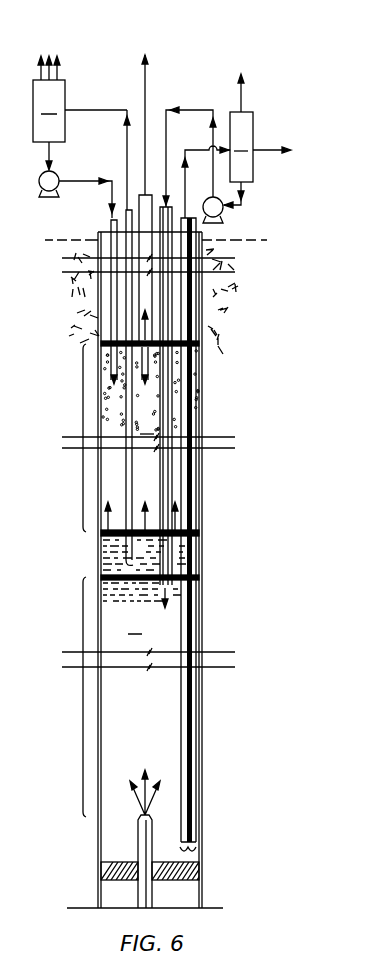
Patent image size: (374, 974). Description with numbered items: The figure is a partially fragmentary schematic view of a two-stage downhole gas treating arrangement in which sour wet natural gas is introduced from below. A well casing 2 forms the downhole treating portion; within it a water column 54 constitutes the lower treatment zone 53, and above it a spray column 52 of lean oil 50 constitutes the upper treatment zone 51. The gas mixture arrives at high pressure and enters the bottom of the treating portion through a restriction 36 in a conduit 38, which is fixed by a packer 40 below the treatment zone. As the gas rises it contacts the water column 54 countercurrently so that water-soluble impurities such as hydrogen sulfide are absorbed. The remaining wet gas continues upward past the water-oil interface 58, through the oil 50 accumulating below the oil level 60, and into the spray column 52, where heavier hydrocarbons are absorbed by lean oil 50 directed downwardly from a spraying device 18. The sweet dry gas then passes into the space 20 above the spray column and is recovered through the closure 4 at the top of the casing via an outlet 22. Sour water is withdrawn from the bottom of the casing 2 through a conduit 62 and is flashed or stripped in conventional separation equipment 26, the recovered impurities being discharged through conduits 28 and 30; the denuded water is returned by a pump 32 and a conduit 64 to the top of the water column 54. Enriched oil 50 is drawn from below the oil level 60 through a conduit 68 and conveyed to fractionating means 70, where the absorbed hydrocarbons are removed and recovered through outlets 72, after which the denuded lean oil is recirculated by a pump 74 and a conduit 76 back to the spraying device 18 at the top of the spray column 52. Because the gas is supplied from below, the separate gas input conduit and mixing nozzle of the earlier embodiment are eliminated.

The casing 2 is at (200, 613).
The closure 4 is at (98, 237).
The spraying device 18 is at (203, 343).
The space 20 is at (111, 298).
The outlet 22 is at (148, 86).
The separation equipment 26 is at (241, 147).
The conduit 28 is at (244, 108).
The conduit 30 is at (262, 148).
The pump 32 is at (226, 214).
The restriction 36 is at (144, 814).
The conduit 38 is at (140, 897).
The packer 40 is at (200, 872).
The lean oil 50 is at (200, 545).
The treatment zone 51 is at (83, 406).
The spray column 52 is at (141, 474).
The treatment zone 53 is at (83, 690).
The water column 54 is at (147, 611).
The water-oil interface 58 is at (200, 572).
The oil level 60 is at (200, 533).
The conduit 62 is at (185, 708).
The conduit 64 is at (188, 110).
The conduit 68 is at (127, 473).
The fractionating means 70 is at (80, 125).
The outlets 72 is at (58, 73).
The pump 74 is at (59, 174).
The conduit 76 is at (86, 180).